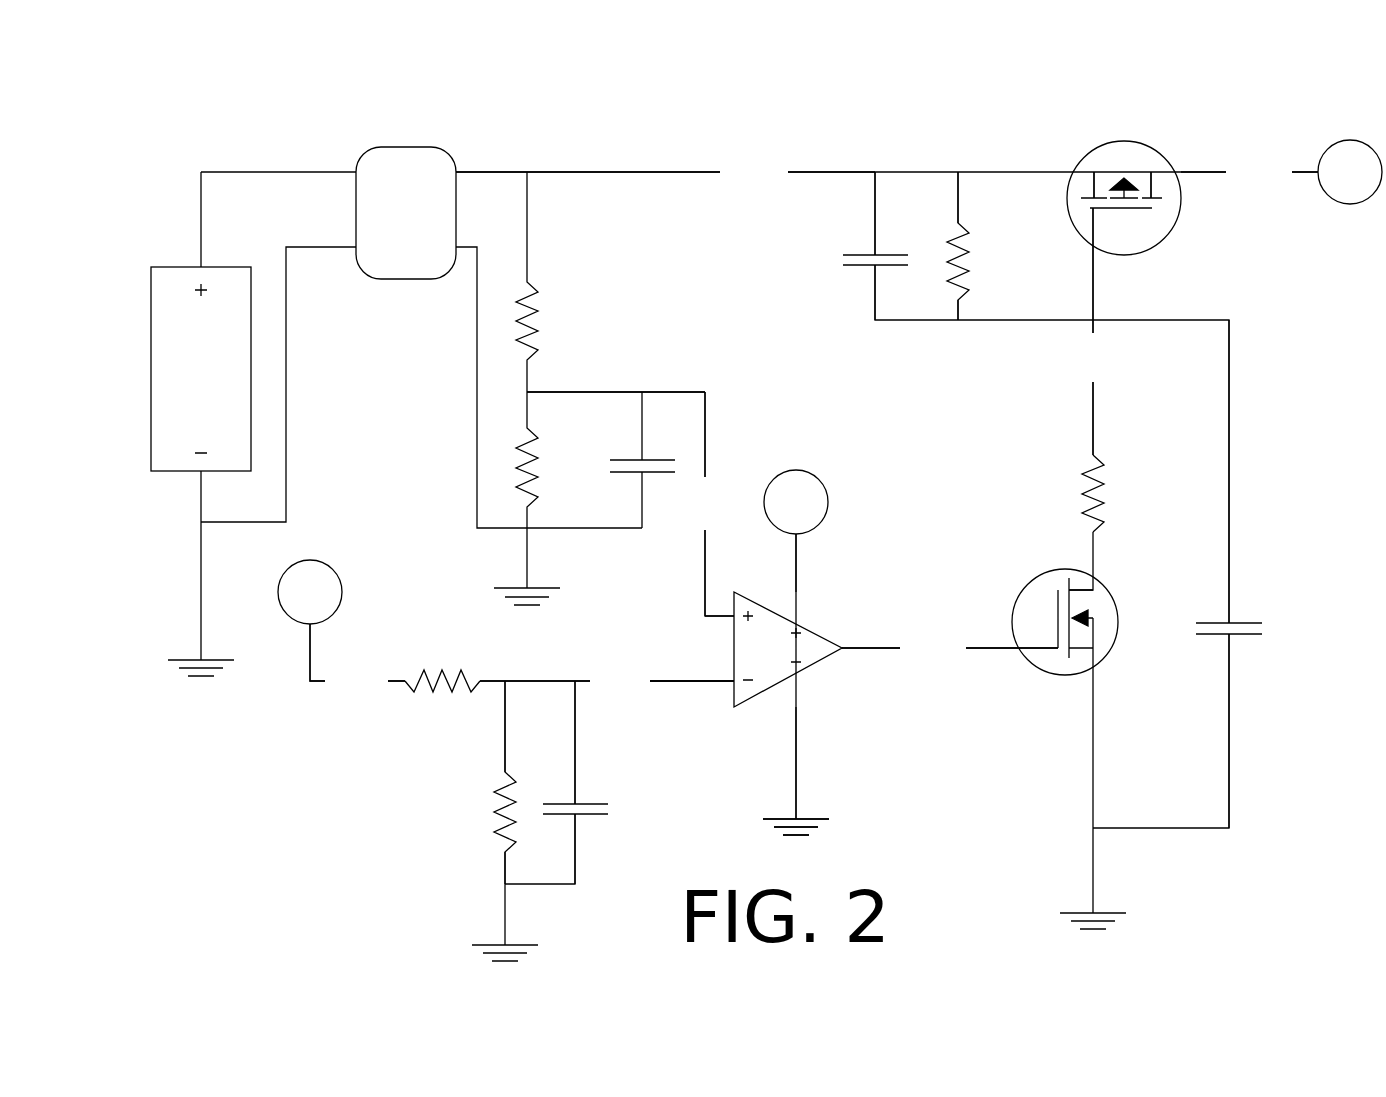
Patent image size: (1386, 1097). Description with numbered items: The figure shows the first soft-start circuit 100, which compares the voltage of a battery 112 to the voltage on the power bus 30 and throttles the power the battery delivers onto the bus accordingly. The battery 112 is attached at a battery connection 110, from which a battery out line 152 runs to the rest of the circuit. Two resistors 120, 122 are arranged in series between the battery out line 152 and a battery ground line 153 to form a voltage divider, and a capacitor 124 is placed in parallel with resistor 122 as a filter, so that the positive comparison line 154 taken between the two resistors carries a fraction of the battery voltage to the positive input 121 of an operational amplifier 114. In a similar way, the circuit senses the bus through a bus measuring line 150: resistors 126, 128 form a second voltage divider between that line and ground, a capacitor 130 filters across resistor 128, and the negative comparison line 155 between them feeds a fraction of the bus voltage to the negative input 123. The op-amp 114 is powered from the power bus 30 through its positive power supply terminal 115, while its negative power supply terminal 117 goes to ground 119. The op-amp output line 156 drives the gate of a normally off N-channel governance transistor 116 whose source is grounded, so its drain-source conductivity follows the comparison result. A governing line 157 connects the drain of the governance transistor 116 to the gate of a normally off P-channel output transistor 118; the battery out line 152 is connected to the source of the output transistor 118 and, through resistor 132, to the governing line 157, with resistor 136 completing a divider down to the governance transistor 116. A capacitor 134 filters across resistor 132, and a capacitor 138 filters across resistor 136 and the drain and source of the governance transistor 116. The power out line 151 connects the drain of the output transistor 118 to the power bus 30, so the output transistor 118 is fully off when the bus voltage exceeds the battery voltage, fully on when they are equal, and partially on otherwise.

The first soft-start circuit 100 is at (192, 96).
The battery connection 110 is at (383, 147).
The battery 112 is at (150, 390).
The operational amplifier 114 is at (815, 632).
The positive power supply terminal 115 is at (794, 578).
The governance transistor 116 is at (1058, 570).
The negative power supply terminal 117 is at (800, 700).
The output transistor 118 is at (1098, 155).
The ground 119 is at (810, 819).
The resistor 120 is at (540, 322).
The positive input 121 is at (725, 616).
The resistor 122 is at (530, 448).
The negative input 123 is at (720, 690).
The capacitor 124 is at (660, 460).
The resistor 126 is at (433, 682).
The resistor 128 is at (505, 795).
The capacitor 130 is at (600, 815).
The resistor 132 is at (957, 230).
The capacitor 134 is at (865, 255).
The resistor 136 is at (1103, 477).
The capacitor 138 is at (1262, 622).
The bus measuring line 150 is at (357, 662).
The power out line 151 is at (1249, 172).
The battery out line 152 is at (665, 172).
The battery ground line 153 is at (576, 388).
The positive comparison line 154 is at (704, 504).
The negative comparison line 155 is at (607, 681).
The op-amp output line 156 is at (950, 648).
The governing line 157 is at (1093, 331).
The power bus 30 is at (830, 382).